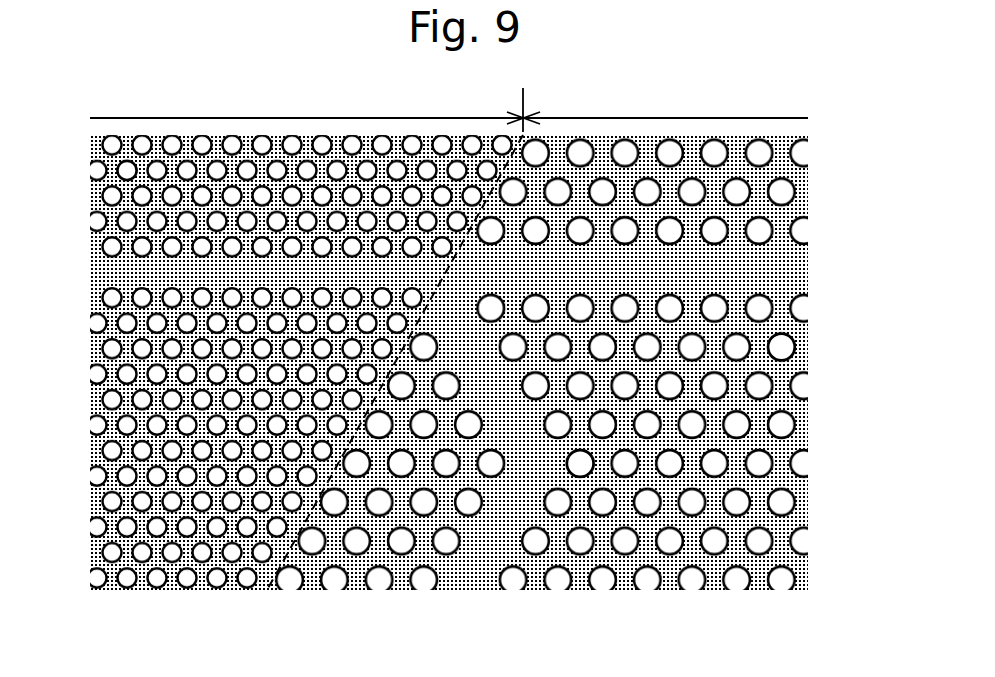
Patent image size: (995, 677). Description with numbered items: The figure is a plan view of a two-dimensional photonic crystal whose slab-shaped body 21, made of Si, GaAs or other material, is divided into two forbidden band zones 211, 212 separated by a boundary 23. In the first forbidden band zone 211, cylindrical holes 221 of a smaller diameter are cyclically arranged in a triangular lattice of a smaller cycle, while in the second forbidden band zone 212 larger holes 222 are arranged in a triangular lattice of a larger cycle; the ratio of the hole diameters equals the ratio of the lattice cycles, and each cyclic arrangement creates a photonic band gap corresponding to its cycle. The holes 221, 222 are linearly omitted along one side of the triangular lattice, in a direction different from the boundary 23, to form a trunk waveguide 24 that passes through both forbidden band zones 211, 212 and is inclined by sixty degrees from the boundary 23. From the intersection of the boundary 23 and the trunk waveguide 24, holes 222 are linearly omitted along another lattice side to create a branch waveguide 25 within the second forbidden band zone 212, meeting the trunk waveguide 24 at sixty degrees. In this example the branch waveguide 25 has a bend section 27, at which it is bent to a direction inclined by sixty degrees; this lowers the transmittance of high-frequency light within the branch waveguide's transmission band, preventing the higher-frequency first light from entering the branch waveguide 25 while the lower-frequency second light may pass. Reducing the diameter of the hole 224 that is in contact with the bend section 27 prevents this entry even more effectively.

The body 21 is at (788, 168).
The forbidden band zone 211 is at (302, 340).
The forbidden band zone 212 is at (546, 343).
The hole 221 is at (127, 167).
The hole 222 is at (788, 350).
The hole 224 is at (580, 465).
The boundary 23 is at (285, 545).
The trunk waveguide 24 is at (757, 260).
The branch waveguide 25 is at (483, 545).
The bend section 27 is at (540, 468).